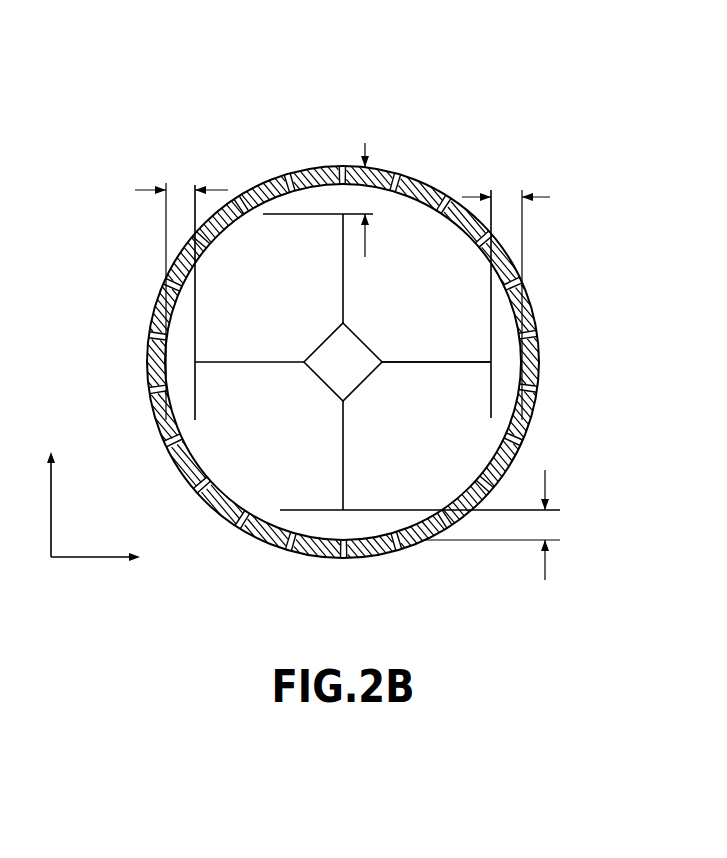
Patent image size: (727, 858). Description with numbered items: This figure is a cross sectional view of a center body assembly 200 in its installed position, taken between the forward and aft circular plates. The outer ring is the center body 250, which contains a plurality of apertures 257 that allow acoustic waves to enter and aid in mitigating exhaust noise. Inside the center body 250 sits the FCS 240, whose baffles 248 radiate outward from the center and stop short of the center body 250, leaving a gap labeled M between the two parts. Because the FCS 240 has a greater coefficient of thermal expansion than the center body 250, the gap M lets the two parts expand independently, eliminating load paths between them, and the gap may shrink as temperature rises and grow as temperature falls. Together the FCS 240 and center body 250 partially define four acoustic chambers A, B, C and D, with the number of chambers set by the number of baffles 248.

The center body assembly 200 is at (212, 78).
The center body 250 is at (312, 166).
The apertures 257 is at (243, 522).
The FCS 240 is at (480, 367).
The baffles 248 is at (447, 362).